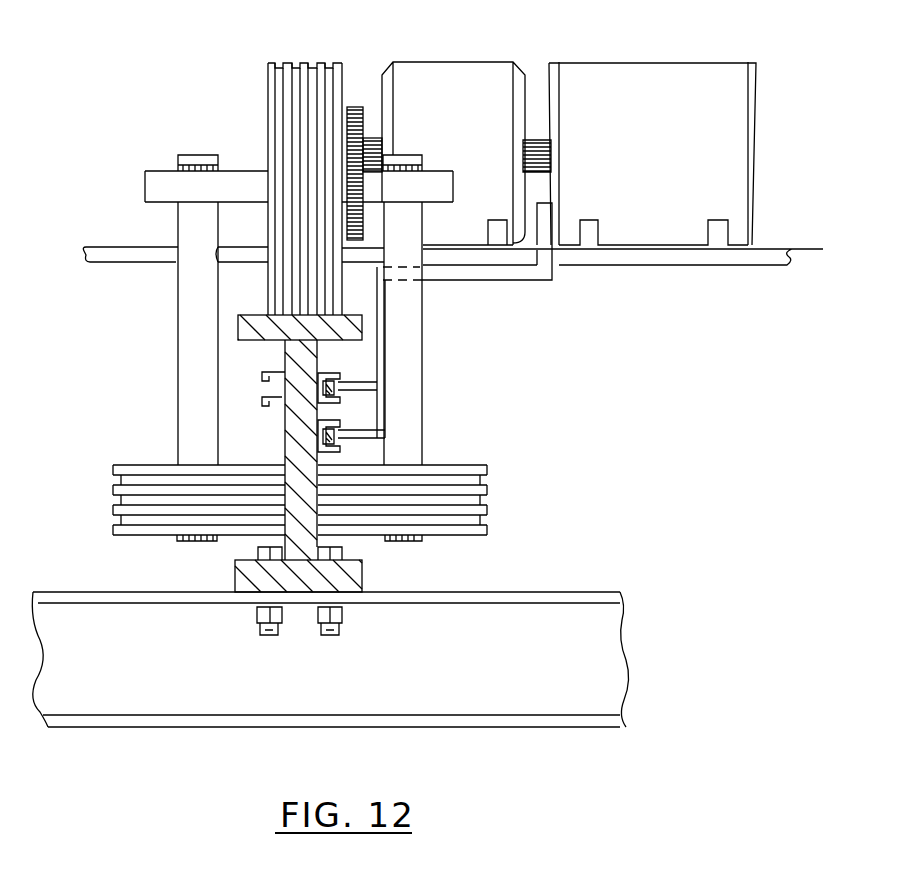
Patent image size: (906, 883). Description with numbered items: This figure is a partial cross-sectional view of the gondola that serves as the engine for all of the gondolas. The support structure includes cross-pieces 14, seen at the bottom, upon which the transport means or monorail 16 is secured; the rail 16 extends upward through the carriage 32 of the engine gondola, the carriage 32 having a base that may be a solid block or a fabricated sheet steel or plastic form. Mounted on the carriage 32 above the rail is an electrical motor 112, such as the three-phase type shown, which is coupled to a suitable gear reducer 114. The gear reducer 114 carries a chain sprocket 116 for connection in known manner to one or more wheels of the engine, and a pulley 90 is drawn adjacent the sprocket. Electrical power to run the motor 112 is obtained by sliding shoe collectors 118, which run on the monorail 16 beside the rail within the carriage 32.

The cross-pieces 14 is at (488, 592).
The rail 16 is at (271, 340).
The carriage 32 is at (110, 230).
The drive pulley 90 is at (280, 63).
The electrical motor 112 is at (735, 62).
The gear reducer 114 is at (473, 62).
The chain sprocket 116 is at (352, 107).
The sliding shoe collectors 118 is at (272, 407).